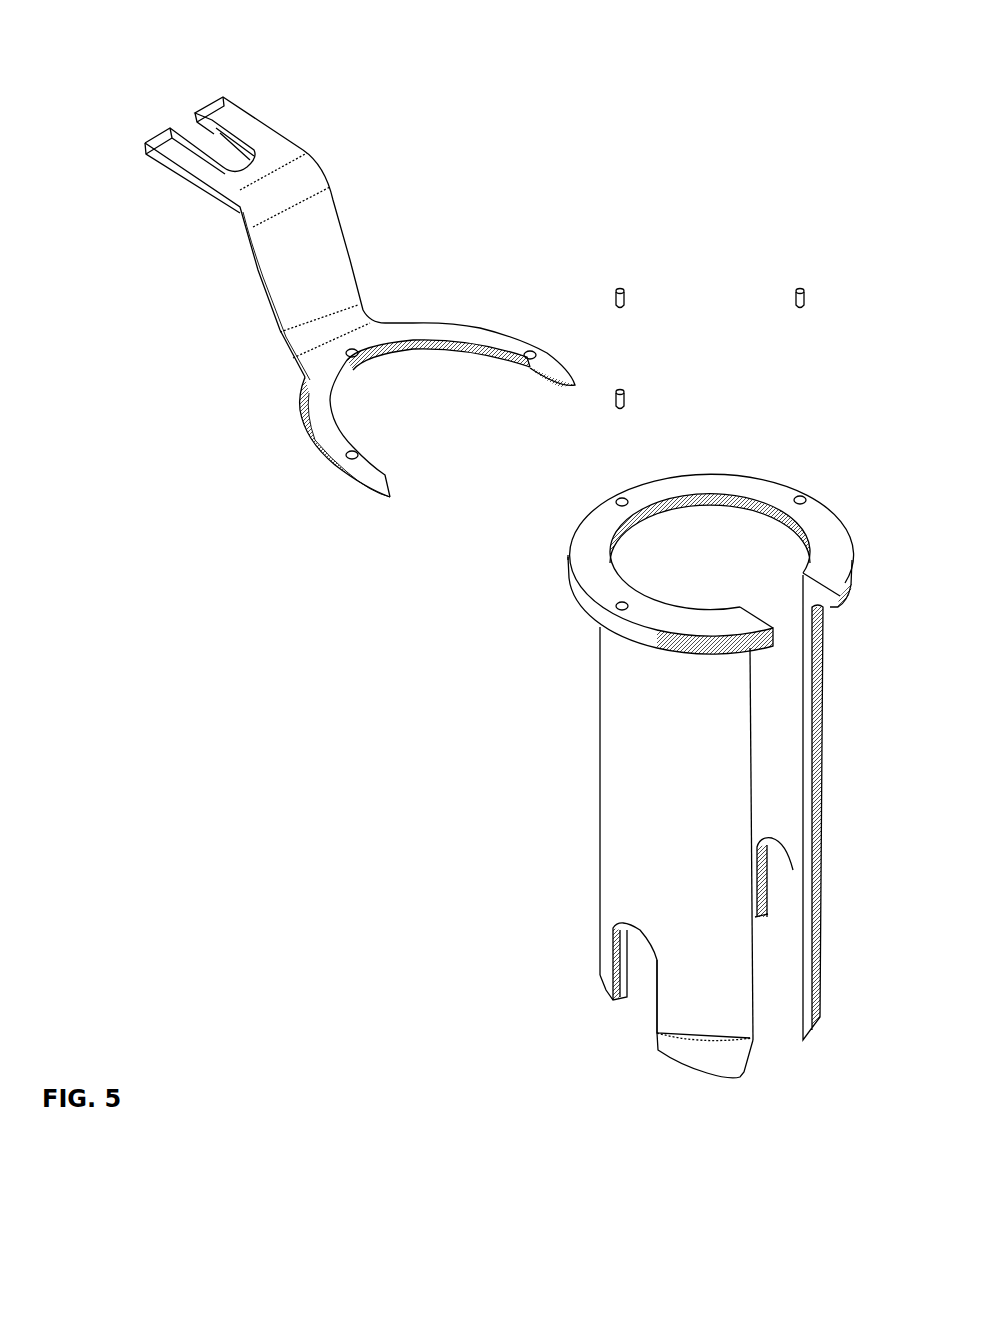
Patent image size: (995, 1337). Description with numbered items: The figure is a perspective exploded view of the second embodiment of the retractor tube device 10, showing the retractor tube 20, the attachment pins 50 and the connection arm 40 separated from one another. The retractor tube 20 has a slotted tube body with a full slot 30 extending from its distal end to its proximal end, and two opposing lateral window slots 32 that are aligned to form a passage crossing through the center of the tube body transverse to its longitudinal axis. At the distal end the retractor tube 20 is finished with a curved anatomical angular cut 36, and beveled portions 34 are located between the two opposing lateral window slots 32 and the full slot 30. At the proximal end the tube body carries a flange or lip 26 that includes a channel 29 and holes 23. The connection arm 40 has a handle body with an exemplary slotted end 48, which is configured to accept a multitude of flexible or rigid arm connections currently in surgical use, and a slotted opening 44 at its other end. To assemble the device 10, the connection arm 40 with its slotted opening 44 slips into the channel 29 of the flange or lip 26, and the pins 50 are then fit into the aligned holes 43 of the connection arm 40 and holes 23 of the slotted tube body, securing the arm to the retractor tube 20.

The retractor tube device 10 is at (94, 54).
The retractor tube 20 is at (582, 751).
The holes 23 is at (804, 492).
The flange or lip 26 is at (852, 592).
The channel 29 is at (596, 616).
The full slot 30 is at (782, 1035).
The lateral window slots 32 is at (633, 1012).
The beveled portions 34 is at (718, 1085).
The curved anatomical angular cut 36 is at (596, 970).
The connection arm 40 is at (338, 221).
The holes 43 is at (347, 456).
The slotted opening 44 is at (460, 428).
The slotted end 48 is at (145, 153).
The pins 50 is at (618, 272).